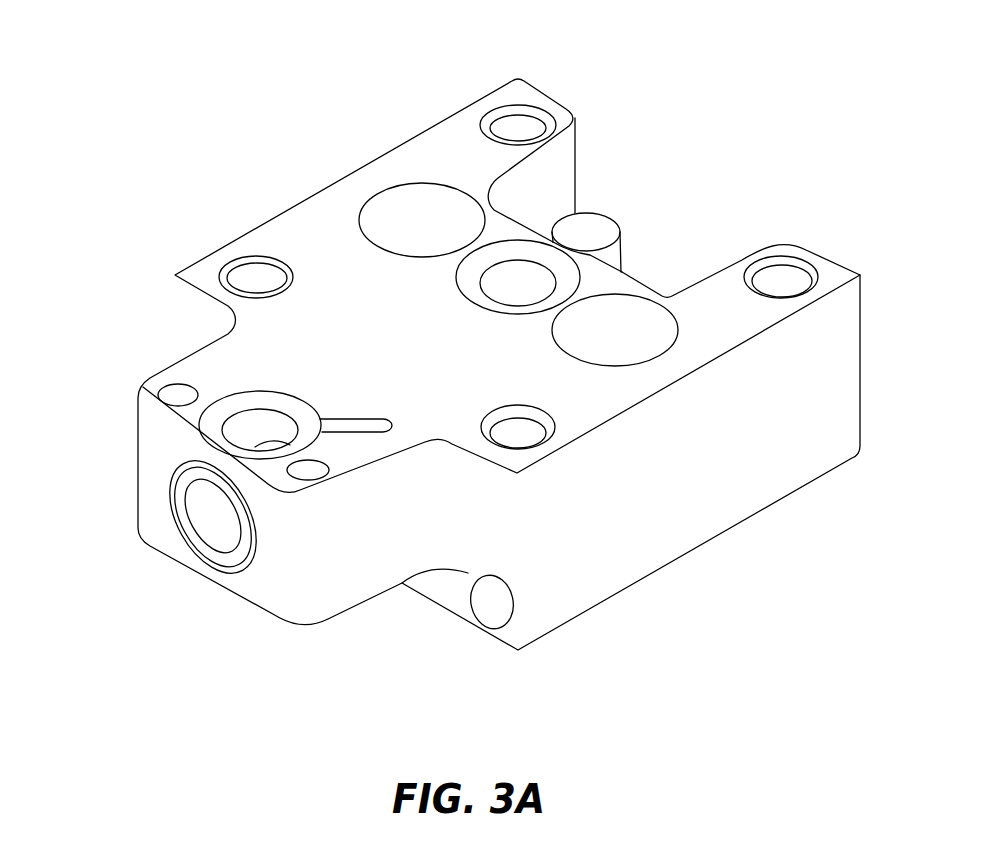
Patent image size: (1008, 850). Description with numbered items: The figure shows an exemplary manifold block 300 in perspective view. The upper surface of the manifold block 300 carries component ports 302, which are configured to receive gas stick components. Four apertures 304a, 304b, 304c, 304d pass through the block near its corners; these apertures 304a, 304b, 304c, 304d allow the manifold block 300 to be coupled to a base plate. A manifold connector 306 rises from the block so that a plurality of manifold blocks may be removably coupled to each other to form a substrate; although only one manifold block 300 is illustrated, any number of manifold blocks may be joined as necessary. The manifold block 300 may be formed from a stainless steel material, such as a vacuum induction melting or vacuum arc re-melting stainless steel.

The manifold block 300 is at (224, 131).
The component ports 302 is at (517, 287).
The aperture 304a is at (517, 128).
The aperture 304b is at (782, 273).
The aperture 304c is at (517, 432).
The aperture 304d is at (247, 268).
The manifold connector 306 is at (590, 225).